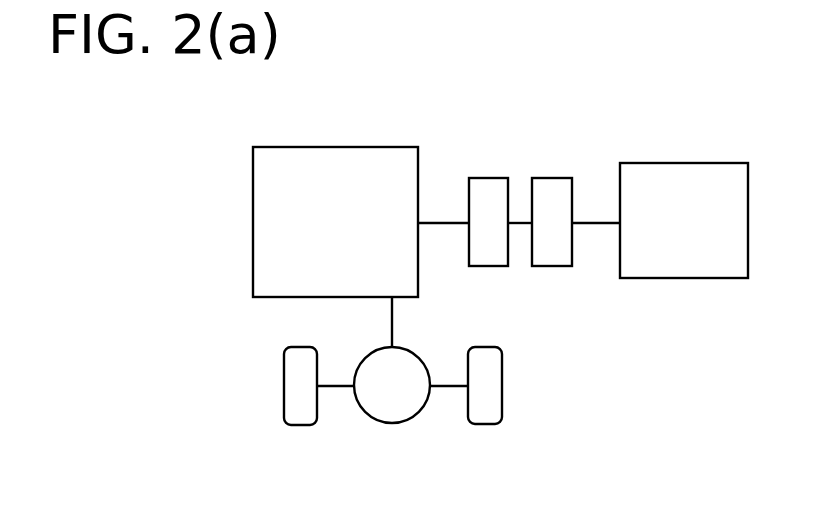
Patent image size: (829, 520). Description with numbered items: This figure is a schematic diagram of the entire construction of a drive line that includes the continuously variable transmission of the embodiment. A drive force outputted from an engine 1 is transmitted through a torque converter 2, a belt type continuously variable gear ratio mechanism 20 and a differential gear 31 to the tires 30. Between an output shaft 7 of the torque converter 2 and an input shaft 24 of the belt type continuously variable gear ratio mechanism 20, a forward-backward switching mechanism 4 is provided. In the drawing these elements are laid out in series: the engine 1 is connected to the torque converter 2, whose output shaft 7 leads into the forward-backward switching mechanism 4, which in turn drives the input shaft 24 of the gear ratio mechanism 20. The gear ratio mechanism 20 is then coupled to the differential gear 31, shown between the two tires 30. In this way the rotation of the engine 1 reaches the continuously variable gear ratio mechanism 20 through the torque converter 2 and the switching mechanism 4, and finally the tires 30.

The engine 1 is at (682, 163).
The torque converter 2 is at (554, 178).
The forward-backward switching mechanism 4 is at (484, 178).
The output shaft 7 is at (523, 225).
The belt type continuously variable gear ratio mechanism 20 is at (288, 152).
The input shaft 24 is at (445, 225).
The tires 30 is at (503, 403).
The differential gear 31 is at (405, 423).